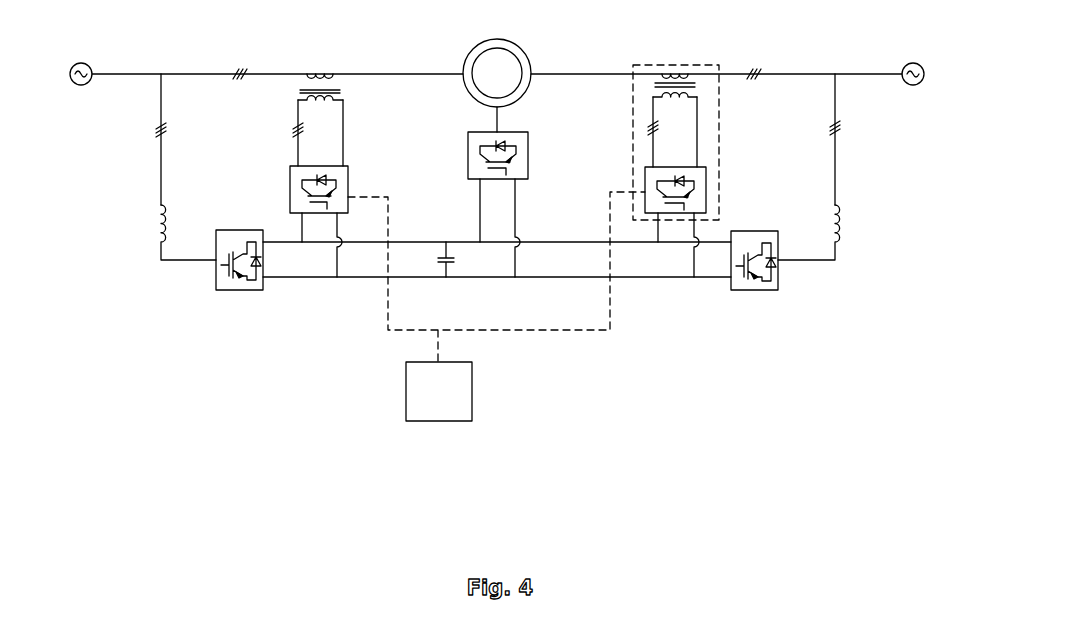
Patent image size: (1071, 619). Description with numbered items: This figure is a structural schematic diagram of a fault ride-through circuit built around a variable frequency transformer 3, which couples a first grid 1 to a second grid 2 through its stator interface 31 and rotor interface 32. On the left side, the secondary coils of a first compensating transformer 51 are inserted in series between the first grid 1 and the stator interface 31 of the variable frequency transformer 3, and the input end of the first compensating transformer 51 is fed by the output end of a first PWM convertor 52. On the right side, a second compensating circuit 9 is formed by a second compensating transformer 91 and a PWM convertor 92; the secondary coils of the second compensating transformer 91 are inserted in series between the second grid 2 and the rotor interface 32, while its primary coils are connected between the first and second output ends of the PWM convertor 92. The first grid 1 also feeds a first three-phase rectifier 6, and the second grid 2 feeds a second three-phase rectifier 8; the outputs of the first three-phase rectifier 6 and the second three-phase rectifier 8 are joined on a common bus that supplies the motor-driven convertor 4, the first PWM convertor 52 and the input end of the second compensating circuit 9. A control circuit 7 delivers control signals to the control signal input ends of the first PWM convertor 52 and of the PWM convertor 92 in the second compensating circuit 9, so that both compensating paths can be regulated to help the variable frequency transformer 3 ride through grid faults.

The first grid 1 is at (82, 64).
The second grid 2 is at (915, 63).
The variable frequency transformer 3 is at (499, 55).
The stator interface 31 is at (464, 70).
The rotor interface 32 is at (526, 70).
The motor-driven convertor 4 is at (468, 140).
The first compensating transformer 51 is at (318, 72).
The first PWM convertor 52 is at (290, 168).
The first three-phase rectifier 6 is at (255, 230).
The control circuit 7 is at (472, 398).
The second three-phase rectifier 8 is at (735, 231).
The second compensating circuit 9 is at (692, 151).
The second compensating transformer 91 is at (676, 70).
The PWM convertor 92 is at (706, 168).